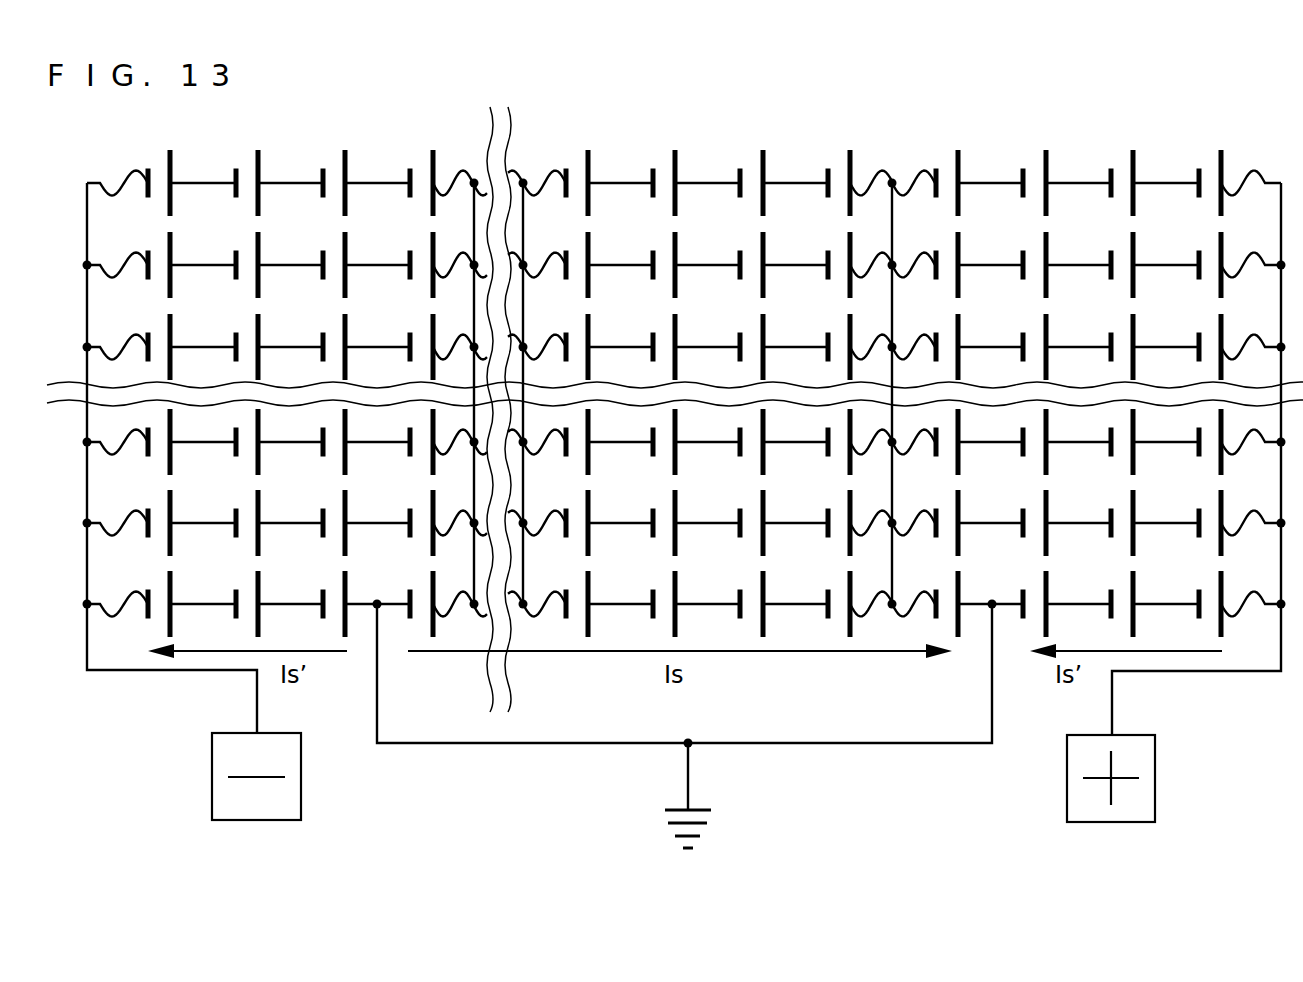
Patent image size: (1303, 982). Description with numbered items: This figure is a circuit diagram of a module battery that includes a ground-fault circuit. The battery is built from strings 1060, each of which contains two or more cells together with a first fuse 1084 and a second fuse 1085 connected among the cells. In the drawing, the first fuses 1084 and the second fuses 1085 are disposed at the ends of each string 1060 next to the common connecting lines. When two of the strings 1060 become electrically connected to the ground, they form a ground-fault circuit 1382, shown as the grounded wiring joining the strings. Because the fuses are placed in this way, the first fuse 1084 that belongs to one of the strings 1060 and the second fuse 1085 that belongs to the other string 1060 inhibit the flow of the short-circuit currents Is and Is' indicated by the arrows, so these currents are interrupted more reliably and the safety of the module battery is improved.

The string 1060 is at (684, 393).
The first fuse 1084 is at (825, 394).
The second fuse 1085 is at (553, 394).
The ground-fault circuit 1382 is at (533, 746).